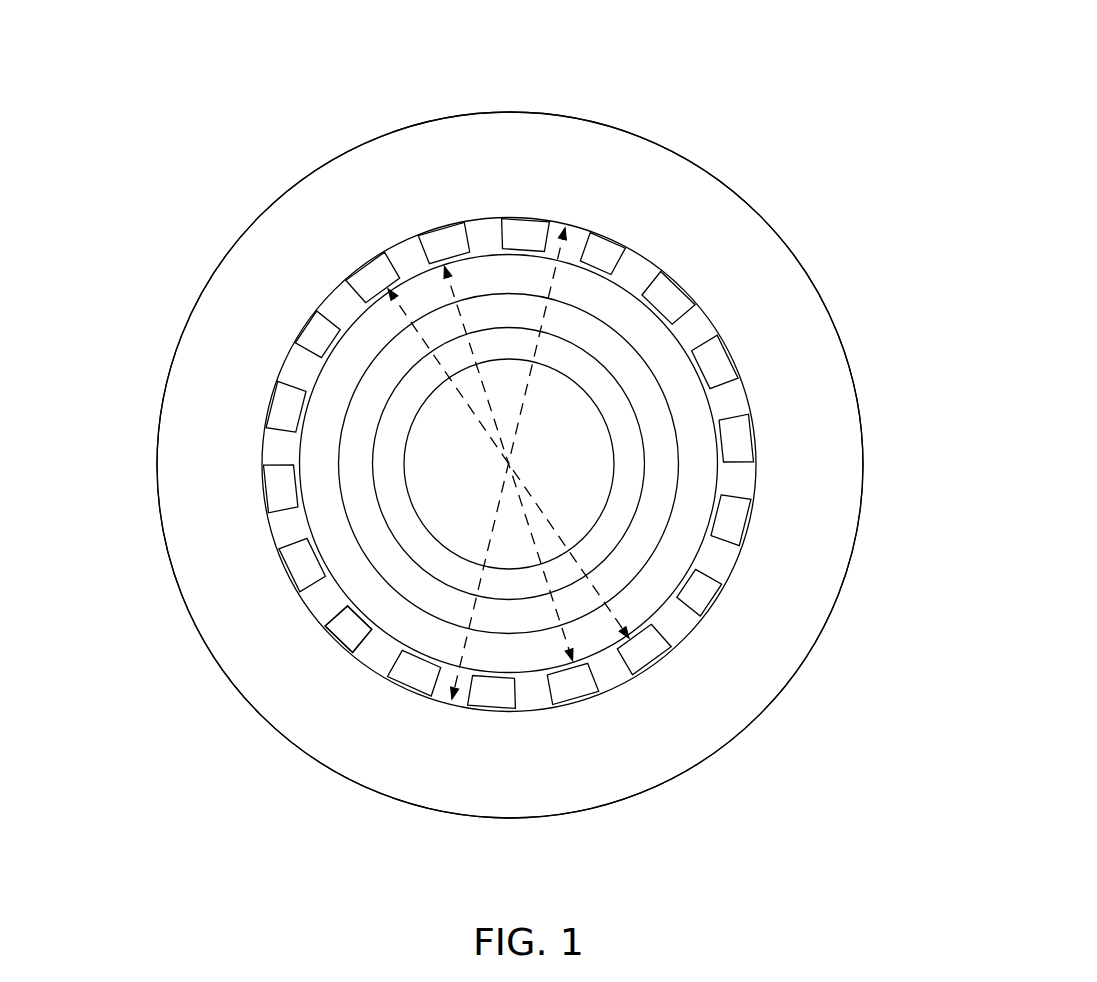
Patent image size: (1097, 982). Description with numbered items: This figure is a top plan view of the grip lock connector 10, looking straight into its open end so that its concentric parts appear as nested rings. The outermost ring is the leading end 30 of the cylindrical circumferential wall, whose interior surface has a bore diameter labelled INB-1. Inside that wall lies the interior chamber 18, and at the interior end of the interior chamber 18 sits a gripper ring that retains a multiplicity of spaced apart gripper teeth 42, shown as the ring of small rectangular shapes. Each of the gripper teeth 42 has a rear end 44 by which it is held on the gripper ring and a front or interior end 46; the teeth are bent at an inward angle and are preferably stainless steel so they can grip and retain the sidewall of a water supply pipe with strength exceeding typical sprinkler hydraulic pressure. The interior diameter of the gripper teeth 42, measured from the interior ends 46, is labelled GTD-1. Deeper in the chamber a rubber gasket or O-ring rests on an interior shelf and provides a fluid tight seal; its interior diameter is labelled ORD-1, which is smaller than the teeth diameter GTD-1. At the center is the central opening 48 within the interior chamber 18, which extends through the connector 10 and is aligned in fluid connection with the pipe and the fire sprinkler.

The grip lock connector 10 is at (847, 55).
The interior chamber 18 is at (503, 392).
The leading end 30 is at (280, 263).
The spaced apart gripper teeth 42 is at (573, 692).
The rear end 44 is at (341, 642).
The front or interior end 46 is at (357, 619).
The central opening 48 is at (453, 484).
The gripper teeth interior diameter (GRDIA) GTD-1 is at (450, 373).
The bore diameter (INBORE) INB-1 is at (557, 283).
The O-ring interior diameter (ORDIA) ORD-1 is at (575, 648).